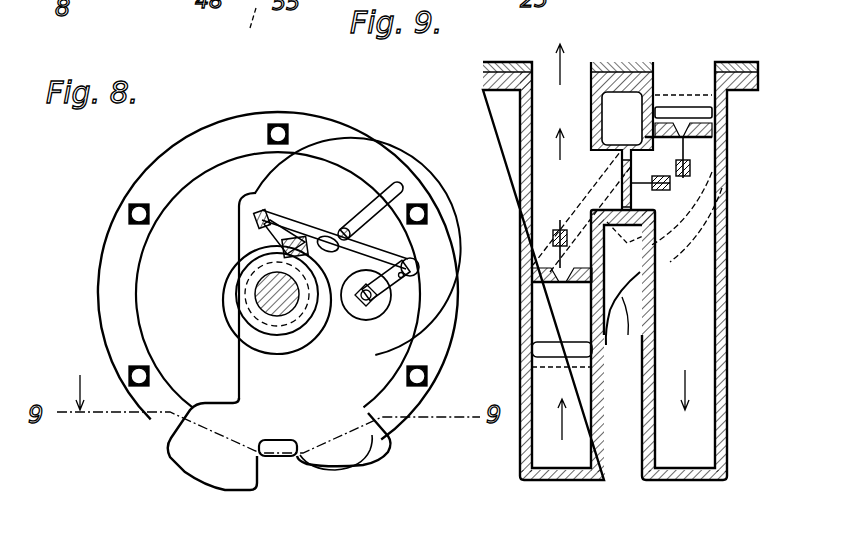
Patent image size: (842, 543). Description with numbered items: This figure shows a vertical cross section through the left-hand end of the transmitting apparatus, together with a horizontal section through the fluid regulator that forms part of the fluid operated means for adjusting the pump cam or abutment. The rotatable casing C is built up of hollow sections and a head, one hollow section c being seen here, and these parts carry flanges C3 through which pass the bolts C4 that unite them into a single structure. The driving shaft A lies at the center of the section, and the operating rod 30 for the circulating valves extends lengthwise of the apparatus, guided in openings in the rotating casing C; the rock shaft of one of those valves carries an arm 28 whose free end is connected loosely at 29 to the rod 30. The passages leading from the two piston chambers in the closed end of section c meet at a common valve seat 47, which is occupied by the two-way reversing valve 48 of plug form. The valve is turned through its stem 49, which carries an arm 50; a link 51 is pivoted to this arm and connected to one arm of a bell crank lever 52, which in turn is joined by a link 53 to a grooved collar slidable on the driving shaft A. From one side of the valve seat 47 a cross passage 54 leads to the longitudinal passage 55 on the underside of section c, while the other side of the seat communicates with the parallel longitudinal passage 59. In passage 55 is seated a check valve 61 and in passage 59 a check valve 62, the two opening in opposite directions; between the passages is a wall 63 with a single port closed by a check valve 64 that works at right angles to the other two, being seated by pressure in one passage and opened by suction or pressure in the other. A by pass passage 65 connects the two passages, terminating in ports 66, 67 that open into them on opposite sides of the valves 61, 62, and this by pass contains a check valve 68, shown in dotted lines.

In FIG. 8, the operating rod 30 is at (367, 206).
In FIG. 8, the two-way reversing valve 48 is at (368, 313).
In FIG. 8, the valve stem 49 is at (360, 307).
In FIG. 8, the arm 50 is at (392, 299).
In FIG. 8, the link 51 is at (400, 252).
In FIG. 8, the bell crank lever 52 is at (290, 208).
In FIG. 8, the link 53 is at (256, 214).
In FIG. 8, the cross passage 54 is at (236, 294).
In FIG. 8, the longitudinal passage 55 is at (335, 447).
In FIG. 9, the longitudinal passage 55 is at (690, 312).
In FIG. 8, the longitudinal passage 59 is at (205, 462).
In FIG. 9, the longitudinal passage 59 is at (545, 115).
In FIG. 9, the check valve 61 is at (690, 140).
In FIG. 9, the check valve 62 is at (562, 275).
In FIG. 9, the wall 63 is at (622, 199).
In FIG. 9, the check valve 64 is at (622, 183).
In FIG. 9, the by pass passage 65 is at (626, 330).
In FIG. 9, the port 66 is at (550, 347).
In FIG. 9, the port 67 is at (698, 116).
In FIG. 9, the check valve 68 is at (627, 212).
In FIG. 9, the arm 28 is at (618, 22).
In FIG. 9, the loose connection 29 is at (687, 73).
In FIG. 8, the valve seat 47 is at (244, 42).
In FIG. 8, the driving shaft A is at (265, 307).
In FIG. 8, the casing C is at (357, 224).
In FIG. 8, the hollow casing section c is at (191, 241).
In FIG. 9, the flange C3 is at (725, 0).
In FIG. 8, the bolt C4 is at (129, 374).
In FIG. 9, the bolt C4 is at (564, 222).